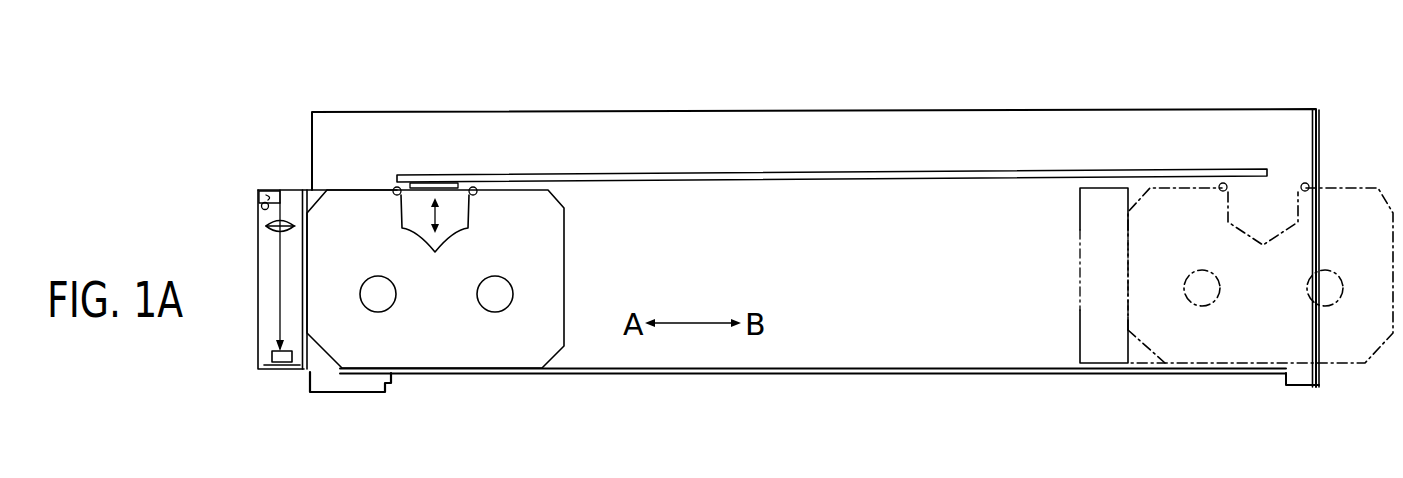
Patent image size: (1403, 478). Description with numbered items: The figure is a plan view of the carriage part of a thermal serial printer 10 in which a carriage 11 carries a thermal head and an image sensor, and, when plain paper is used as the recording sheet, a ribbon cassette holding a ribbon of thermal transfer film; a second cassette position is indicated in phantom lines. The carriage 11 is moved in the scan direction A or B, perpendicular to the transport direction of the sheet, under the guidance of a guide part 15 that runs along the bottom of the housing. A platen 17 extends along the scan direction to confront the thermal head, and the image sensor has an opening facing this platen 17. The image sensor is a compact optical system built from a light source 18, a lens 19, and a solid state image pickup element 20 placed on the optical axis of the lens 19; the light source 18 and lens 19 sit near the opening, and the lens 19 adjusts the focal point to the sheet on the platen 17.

The thermal serial printer 10 is at (677, 38).
The carriage 11 is at (300, 373).
The guide part 15 is at (640, 376).
The platen 17 is at (797, 172).
The light source 18 is at (260, 204).
The lens 19 is at (266, 227).
The solid state image pickup element 20 is at (272, 350).